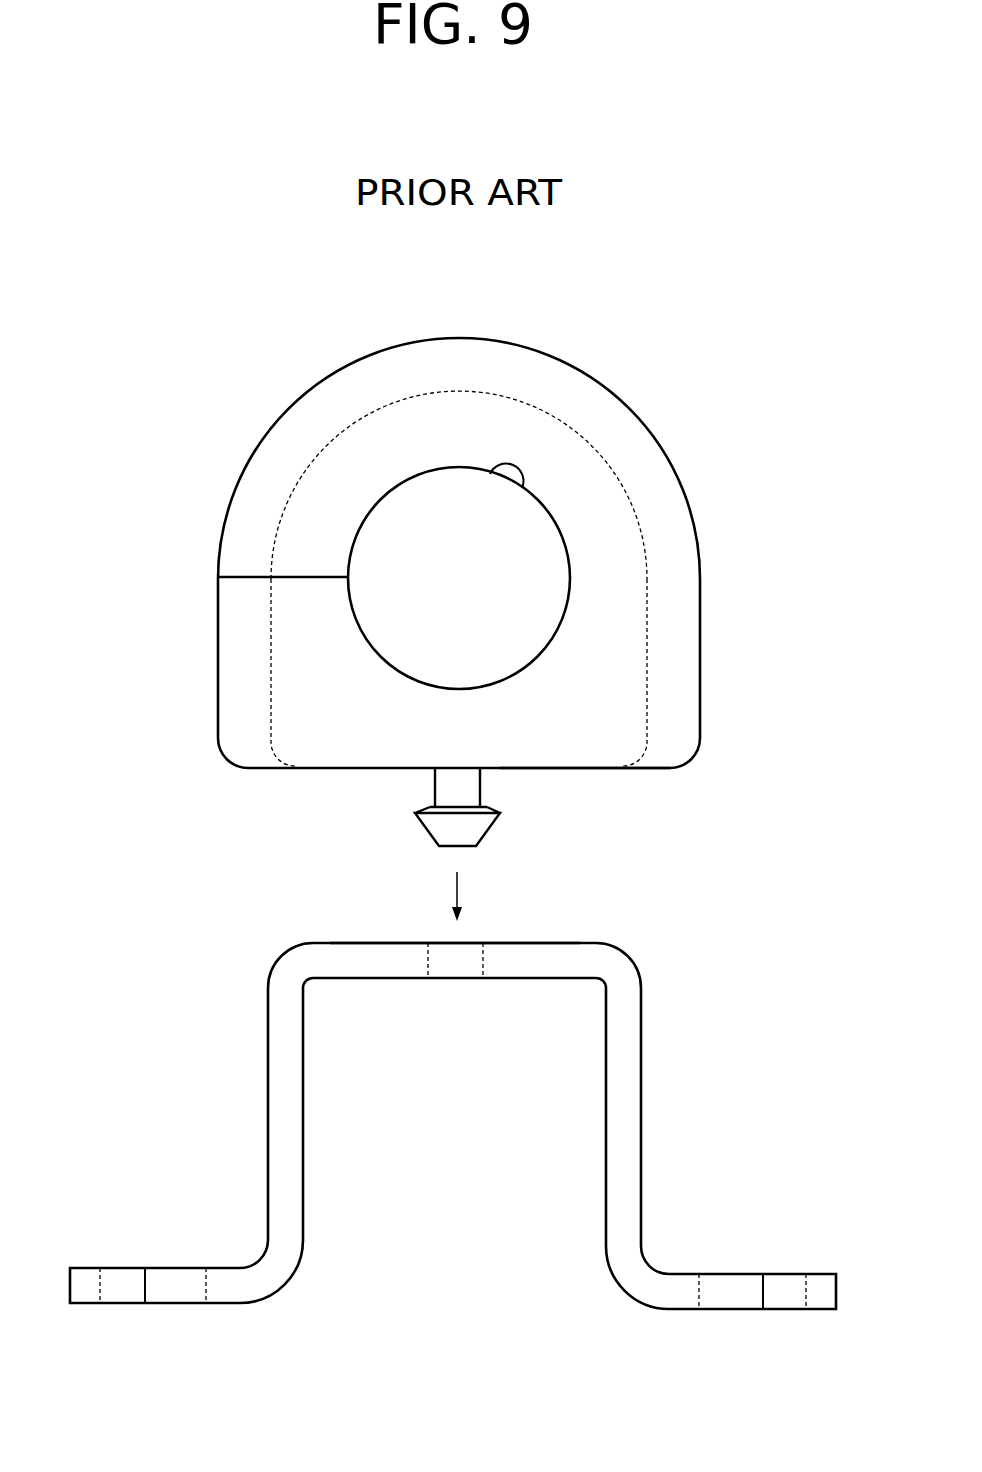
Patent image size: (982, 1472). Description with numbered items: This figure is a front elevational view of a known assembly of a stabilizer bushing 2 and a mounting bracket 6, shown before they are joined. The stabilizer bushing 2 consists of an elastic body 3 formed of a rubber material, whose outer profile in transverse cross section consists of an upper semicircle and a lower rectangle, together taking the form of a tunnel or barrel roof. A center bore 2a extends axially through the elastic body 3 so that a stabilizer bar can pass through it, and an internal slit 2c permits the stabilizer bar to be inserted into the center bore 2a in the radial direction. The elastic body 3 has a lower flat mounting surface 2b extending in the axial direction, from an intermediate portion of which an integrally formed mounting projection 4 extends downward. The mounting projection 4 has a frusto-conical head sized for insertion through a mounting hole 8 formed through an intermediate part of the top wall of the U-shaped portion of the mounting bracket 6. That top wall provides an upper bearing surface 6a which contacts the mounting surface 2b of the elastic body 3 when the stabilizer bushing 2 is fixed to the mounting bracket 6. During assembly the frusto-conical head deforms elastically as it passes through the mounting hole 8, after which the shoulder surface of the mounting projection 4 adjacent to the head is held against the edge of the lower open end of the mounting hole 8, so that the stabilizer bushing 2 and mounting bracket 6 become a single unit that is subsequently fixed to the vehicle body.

The stabilizer bushing 2 is at (686, 442).
The center bore 2a is at (518, 488).
The lower flat mounting surface 2b is at (570, 774).
The internal slit 2c is at (302, 577).
The elastic body 3 is at (632, 597).
The mounting projection 4 is at (468, 828).
The mounting bracket 6 is at (676, 1089).
The upper bearing surface 6a is at (358, 941).
The mounting hole 8 is at (483, 957).